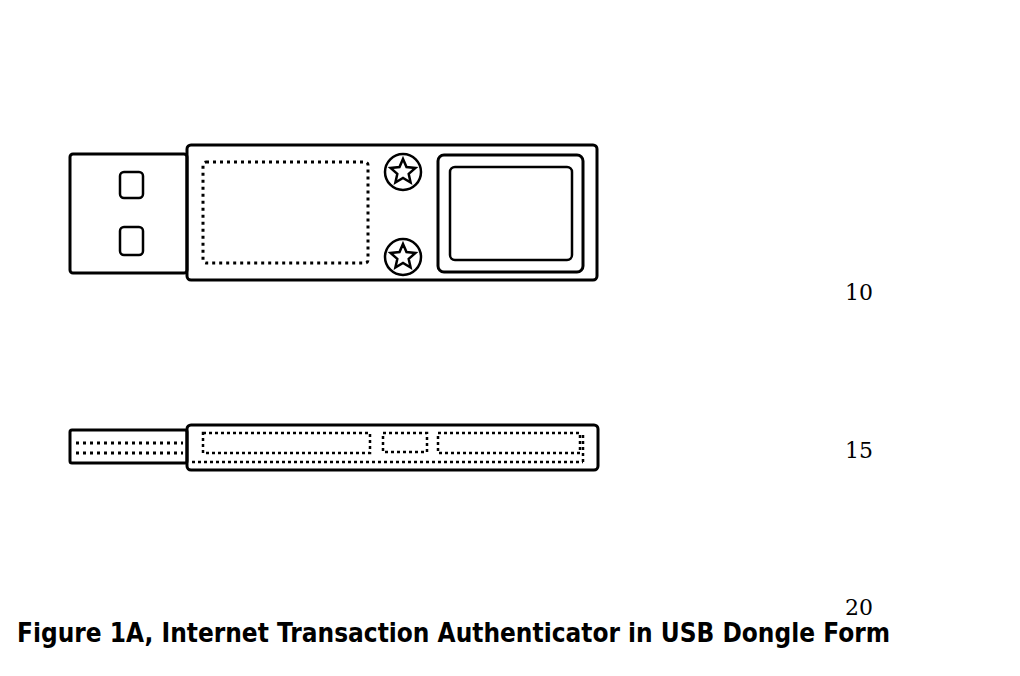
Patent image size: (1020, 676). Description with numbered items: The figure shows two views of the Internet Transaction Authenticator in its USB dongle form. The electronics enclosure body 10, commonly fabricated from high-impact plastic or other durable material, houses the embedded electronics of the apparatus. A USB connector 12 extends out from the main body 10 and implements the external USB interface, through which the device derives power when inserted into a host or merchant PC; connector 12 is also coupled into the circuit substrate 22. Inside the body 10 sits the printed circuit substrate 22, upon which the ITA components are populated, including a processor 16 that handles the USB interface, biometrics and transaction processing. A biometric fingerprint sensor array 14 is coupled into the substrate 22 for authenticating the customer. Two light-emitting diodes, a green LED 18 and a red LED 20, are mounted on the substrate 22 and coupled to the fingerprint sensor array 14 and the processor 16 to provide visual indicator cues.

The electronic enclosure body 10 is at (382, 145).
The USB connector 12 is at (135, 145).
The fingerprint sensor array 14 is at (577, 208).
The processor 16 is at (258, 262).
The green LED 18 is at (408, 262).
The red LED 20 is at (408, 165).
The printed circuit substrate 22 is at (593, 468).